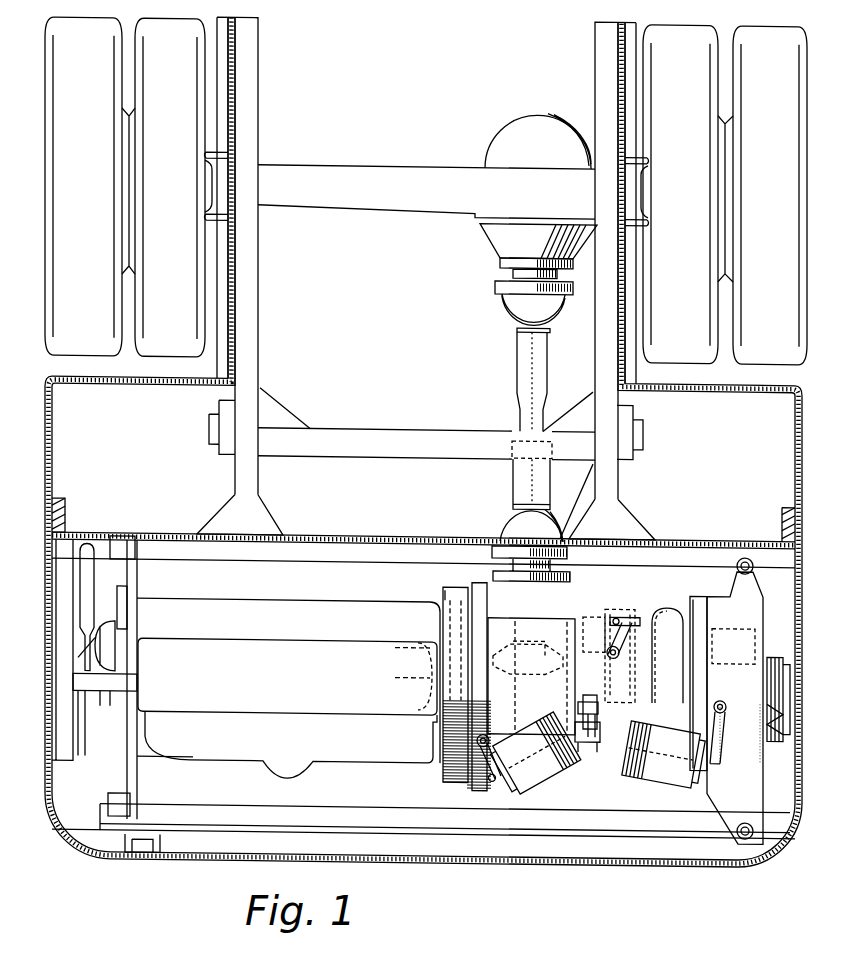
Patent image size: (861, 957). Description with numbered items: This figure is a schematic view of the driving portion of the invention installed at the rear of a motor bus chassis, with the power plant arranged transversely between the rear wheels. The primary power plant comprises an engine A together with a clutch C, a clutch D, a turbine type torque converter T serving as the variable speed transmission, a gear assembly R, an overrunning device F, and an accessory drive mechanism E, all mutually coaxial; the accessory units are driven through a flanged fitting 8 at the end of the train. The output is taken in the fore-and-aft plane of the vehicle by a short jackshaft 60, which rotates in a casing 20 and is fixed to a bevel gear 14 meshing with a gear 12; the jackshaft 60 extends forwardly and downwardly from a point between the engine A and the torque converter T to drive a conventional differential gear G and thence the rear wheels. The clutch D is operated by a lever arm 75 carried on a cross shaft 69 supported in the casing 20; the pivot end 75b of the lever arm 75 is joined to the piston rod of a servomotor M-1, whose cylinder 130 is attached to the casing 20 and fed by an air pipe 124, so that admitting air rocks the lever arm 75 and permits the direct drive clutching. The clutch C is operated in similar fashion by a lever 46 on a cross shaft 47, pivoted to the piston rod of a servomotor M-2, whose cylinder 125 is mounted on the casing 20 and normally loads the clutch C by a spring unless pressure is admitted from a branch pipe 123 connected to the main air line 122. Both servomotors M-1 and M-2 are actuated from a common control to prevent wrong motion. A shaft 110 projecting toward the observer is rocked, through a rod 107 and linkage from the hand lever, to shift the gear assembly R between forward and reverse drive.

The differential gear G is at (538, 138).
The engine A is at (223, 750).
The clutch D is at (460, 782).
The casing 20 is at (502, 590).
The jackshaft 60 is at (538, 602).
The gear 12 is at (503, 650).
The bevel gear 14 is at (548, 650).
The servomotor M-1 is at (535, 792).
The servomotor M-2 is at (660, 778).
The cylinder 130 is at (545, 777).
The cross shaft 69 is at (485, 735).
The lever arm 75 is at (495, 752).
The pivot end 75b is at (492, 781).
The main air line 122 is at (588, 700).
The air pipe 124 is at (588, 715).
The branch pipe 123 is at (606, 722).
The gear assembly R is at (591, 747).
The shaft 110 is at (610, 644).
The rod 107 is at (638, 618).
The overrunning device F is at (628, 660).
The torque converter T is at (670, 630).
The servomotor cylinder 125 is at (667, 733).
The clutch C is at (737, 623).
The cross shaft 47 is at (727, 702).
The lever 46 is at (722, 730).
The accessory drive mechanism E is at (780, 740).
The flanged fitting 8 is at (787, 653).